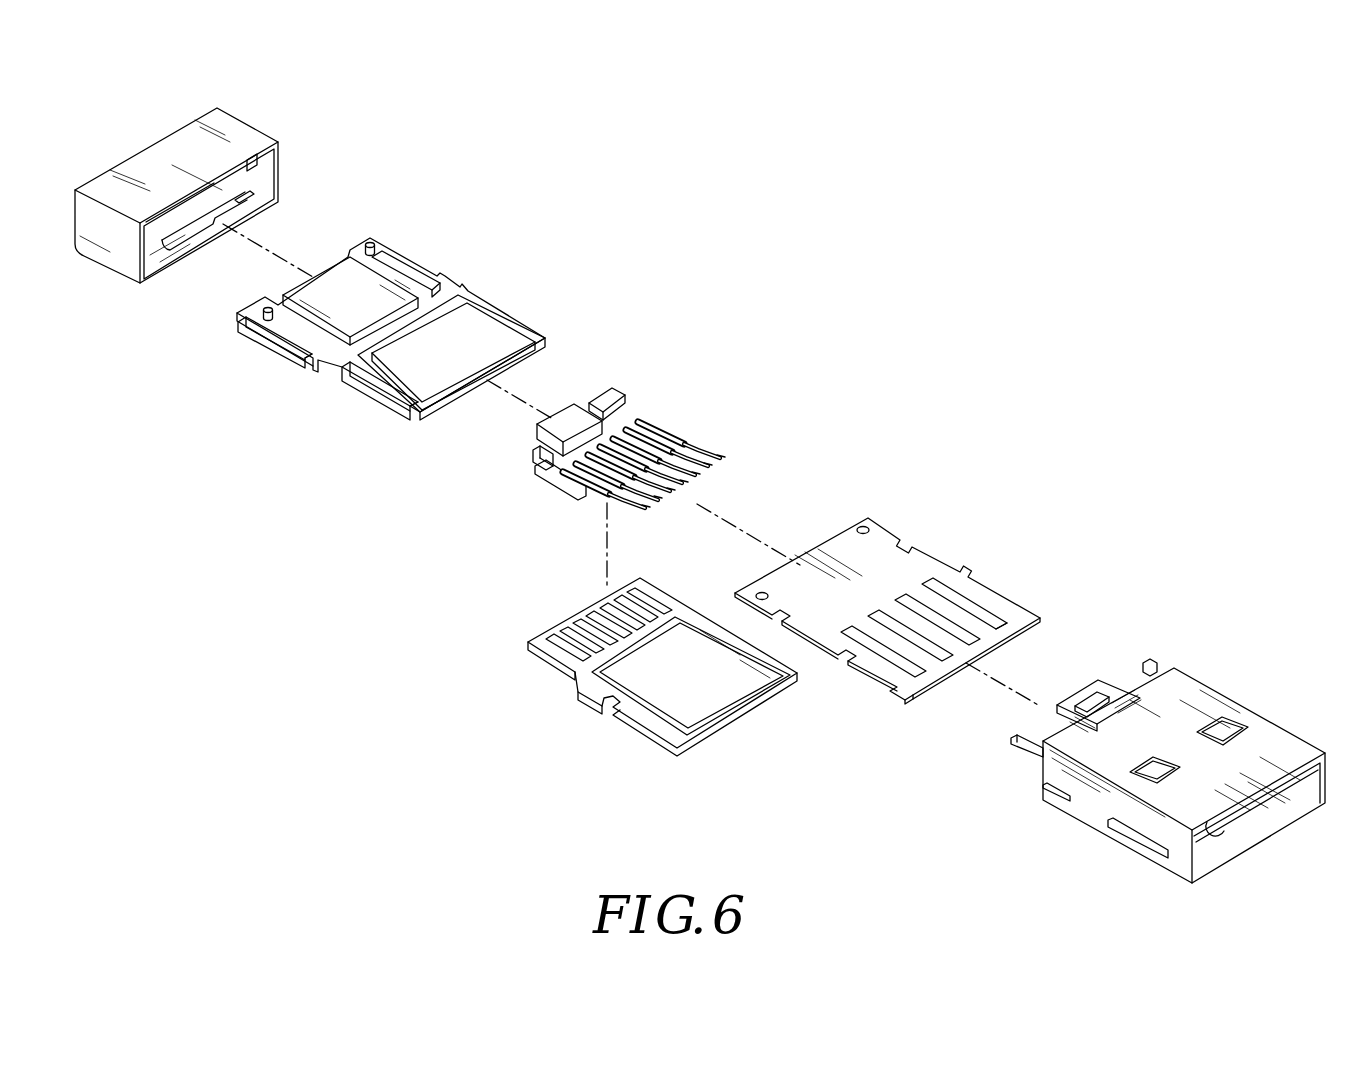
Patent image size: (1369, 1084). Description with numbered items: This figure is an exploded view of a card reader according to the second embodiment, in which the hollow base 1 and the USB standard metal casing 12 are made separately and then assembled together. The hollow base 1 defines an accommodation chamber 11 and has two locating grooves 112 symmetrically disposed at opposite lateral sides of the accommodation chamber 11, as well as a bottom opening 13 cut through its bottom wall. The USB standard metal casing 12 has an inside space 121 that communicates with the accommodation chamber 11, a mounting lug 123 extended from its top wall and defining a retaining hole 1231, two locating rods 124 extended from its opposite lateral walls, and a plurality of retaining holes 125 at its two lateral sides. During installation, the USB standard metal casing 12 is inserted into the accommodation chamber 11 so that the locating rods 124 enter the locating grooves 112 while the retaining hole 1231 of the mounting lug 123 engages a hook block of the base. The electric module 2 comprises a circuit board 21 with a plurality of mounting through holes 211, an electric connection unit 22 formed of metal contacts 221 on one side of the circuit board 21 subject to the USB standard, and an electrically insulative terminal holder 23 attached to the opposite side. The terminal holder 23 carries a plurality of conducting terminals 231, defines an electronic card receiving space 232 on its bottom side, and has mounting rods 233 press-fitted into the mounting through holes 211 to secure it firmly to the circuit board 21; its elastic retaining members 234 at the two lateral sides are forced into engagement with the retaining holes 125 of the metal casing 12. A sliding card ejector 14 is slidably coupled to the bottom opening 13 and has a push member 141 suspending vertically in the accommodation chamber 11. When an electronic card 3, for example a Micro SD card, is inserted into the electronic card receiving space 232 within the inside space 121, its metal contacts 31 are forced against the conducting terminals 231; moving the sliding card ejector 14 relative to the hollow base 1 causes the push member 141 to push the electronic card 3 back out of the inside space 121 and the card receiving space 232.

The hollow base 1 is at (211, 220).
The accommodation chamber 11 is at (252, 200).
The locating grooves 112 is at (256, 170).
The bottom opening 13 is at (175, 246).
The electric module 2 is at (919, 580).
The circuit board 21 is at (887, 580).
The mounting through holes 211 is at (863, 526).
The electric connection unit 22 is at (1003, 592).
The metal contacts 221 is at (1000, 626).
The electrically insulative terminal holder 23 is at (407, 349).
The conducting terminals 231 is at (668, 428).
The electronic card receiving space 232 is at (466, 334).
The mounting rods 233 is at (373, 240).
The elastic retaining members 234 is at (275, 340).
The sliding card ejector 14 is at (595, 477).
The push member 141 is at (532, 458).
The electronic card 3 is at (636, 673).
The metal contacts 31 is at (560, 626).
The USB standard metal casing 12 is at (1119, 771).
The inside space 121 is at (1224, 845).
The mounting lug 123 is at (1050, 686).
The retaining hole 1231 is at (1106, 694).
The locating rods 124 is at (1016, 748).
The retaining holes 125 is at (1043, 786).